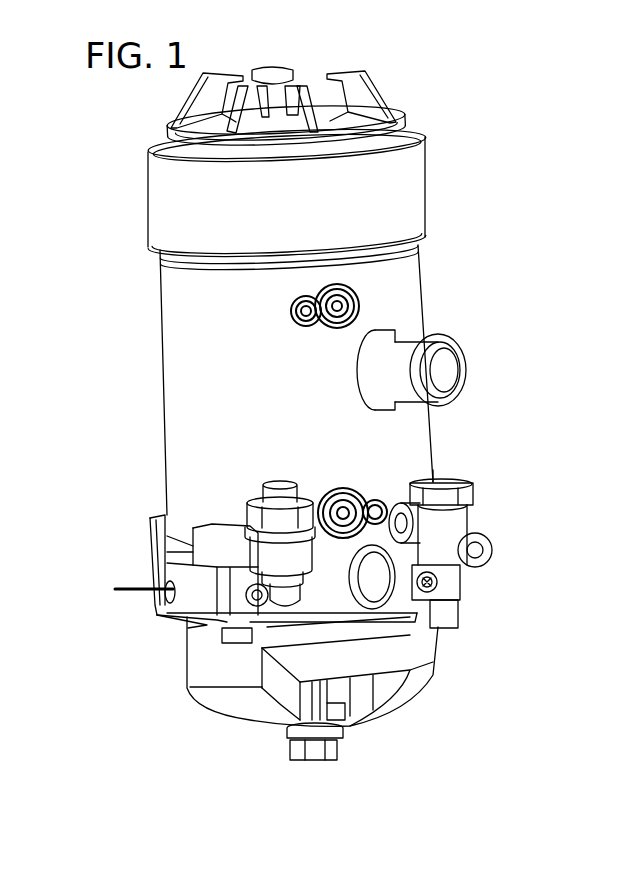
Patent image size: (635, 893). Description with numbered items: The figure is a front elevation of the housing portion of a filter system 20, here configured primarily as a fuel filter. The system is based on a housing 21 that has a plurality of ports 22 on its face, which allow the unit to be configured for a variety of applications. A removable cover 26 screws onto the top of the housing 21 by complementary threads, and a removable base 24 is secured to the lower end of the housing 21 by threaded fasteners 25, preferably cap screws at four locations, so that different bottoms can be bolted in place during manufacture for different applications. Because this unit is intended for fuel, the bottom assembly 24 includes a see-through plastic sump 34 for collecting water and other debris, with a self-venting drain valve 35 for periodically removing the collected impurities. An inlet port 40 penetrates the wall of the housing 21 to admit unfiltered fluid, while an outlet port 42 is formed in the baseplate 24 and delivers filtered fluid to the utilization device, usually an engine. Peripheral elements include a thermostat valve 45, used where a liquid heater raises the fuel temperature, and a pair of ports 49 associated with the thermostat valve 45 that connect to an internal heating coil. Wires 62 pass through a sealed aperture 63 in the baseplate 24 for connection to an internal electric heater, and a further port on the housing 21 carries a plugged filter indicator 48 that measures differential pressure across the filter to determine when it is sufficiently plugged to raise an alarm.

The filter system 20 is at (145, 320).
The housing 21 is at (162, 410).
The ports 22 is at (447, 298).
The removable base 24 is at (205, 588).
The threaded fasteners 25 is at (233, 640).
The removable cover 26 is at (418, 184).
The sump 34 is at (212, 710).
The self-venting drain valve 35 is at (340, 745).
The inlet port 40 is at (436, 373).
The outlet port 42 is at (378, 590).
The thermostat valve 45 is at (462, 515).
The plugged filter indicator 48 is at (262, 550).
The ports 49 is at (357, 308).
The wires 62 is at (127, 593).
The sealed aperture 63 is at (150, 582).